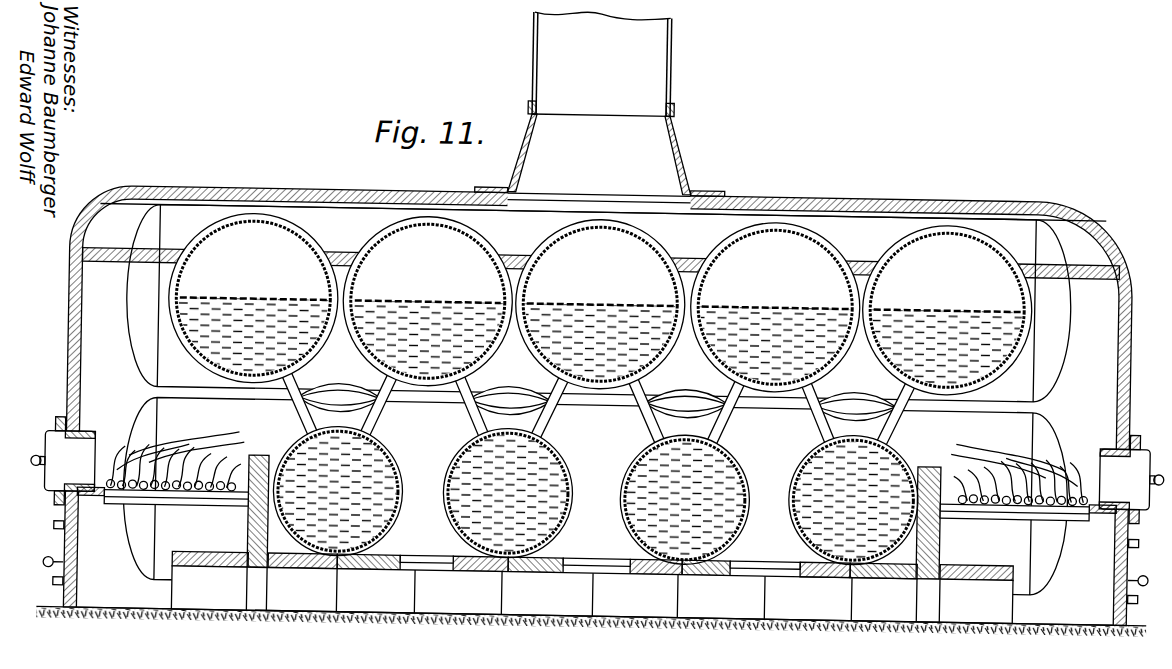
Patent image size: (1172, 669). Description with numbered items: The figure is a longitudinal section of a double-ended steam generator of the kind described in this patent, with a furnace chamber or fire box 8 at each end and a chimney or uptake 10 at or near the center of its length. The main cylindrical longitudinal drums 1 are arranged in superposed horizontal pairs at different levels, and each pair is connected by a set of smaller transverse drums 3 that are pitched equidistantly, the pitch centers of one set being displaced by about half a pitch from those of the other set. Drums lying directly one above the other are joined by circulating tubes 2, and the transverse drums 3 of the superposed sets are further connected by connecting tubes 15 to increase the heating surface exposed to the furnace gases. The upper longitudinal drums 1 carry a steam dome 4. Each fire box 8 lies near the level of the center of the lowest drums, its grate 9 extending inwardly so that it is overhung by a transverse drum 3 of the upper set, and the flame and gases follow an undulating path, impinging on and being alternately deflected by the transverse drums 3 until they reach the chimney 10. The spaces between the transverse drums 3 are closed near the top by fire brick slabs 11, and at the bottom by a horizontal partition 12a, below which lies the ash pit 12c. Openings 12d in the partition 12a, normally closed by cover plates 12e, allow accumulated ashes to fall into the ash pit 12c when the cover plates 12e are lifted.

The longitudinal drum 1 is at (868, 209).
The circulating tube 2 is at (332, 385).
The transverse drum 3 is at (598, 391).
The steam dome 4 is at (79, 317).
The fire box 8 is at (597, 458).
The grate 9 is at (203, 503).
The chimney 10 is at (601, 103).
The fire brick slab 11 is at (158, 247).
The horizontal partition 12a is at (818, 555).
The ash pit 12c is at (458, 592).
The opening 12d is at (571, 556).
The cover plate 12e is at (450, 541).
The connecting tube 15 is at (644, 407).